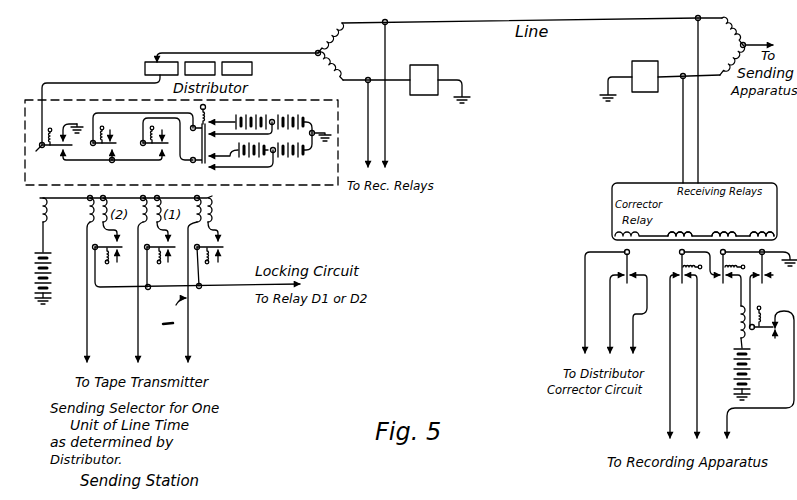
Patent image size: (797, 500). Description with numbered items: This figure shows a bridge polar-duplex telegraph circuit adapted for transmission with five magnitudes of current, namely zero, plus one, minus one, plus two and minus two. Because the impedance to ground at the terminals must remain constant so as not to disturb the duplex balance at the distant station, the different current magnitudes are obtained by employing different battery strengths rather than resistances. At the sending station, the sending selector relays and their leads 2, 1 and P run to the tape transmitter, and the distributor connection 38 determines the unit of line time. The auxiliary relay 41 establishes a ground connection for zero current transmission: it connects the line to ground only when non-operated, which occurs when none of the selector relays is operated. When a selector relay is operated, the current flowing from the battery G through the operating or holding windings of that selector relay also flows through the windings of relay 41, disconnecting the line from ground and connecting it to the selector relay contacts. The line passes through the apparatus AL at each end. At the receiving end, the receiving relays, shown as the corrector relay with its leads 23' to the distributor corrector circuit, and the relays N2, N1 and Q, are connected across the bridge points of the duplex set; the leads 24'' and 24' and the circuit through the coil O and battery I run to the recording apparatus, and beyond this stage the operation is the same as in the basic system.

The distributor connection lead 38 is at (33, 83).
The auxiliary relay 41 is at (32, 210).
The battery G is at (34, 263).
The lead to tape transmitter (unit 2) 2 is at (93, 292).
The lead to tape transmitter (unit 1) 1 is at (144, 292).
The lead to tape transmitter P is at (193, 292).
The corrector relay leads to distributor corrector circuit 23' is at (599, 302).
The lead to recording apparatus 24'' is at (658, 356).
The lead to recording apparatus 24' is at (703, 356).
The coil O is at (731, 322).
The battery I is at (745, 369).
The receiving relay N2 is at (680, 223).
The receiving relay N1 is at (724, 223).
The receiving relay Q is at (762, 223).
The line apparatus AL is at (534, 78).